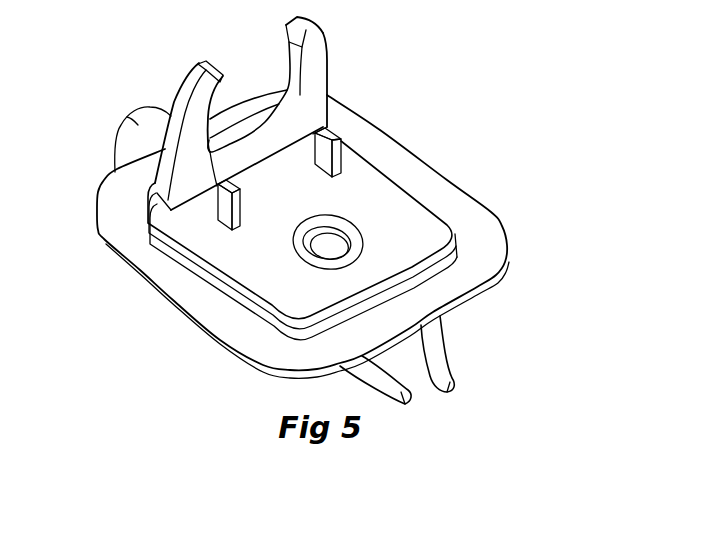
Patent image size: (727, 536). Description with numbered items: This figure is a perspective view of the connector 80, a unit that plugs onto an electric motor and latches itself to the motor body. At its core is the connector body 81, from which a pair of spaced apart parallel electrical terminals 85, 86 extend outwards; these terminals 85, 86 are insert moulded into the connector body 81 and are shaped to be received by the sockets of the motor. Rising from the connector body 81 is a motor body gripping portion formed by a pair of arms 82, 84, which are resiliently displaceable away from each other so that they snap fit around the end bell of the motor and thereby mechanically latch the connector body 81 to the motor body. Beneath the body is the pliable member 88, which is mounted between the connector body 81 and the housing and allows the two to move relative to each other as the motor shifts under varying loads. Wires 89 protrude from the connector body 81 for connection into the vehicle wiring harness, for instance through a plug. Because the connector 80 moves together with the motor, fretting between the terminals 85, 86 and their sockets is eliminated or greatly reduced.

The connector 80 is at (156, 315).
The connector body 81 is at (137, 123).
The arm 82 is at (184, 91).
The arm 84 is at (315, 63).
The electrical terminal 85 is at (229, 201).
The electrical terminal 86 is at (339, 155).
The pliable member 88 is at (424, 180).
The wires 89 is at (378, 373).